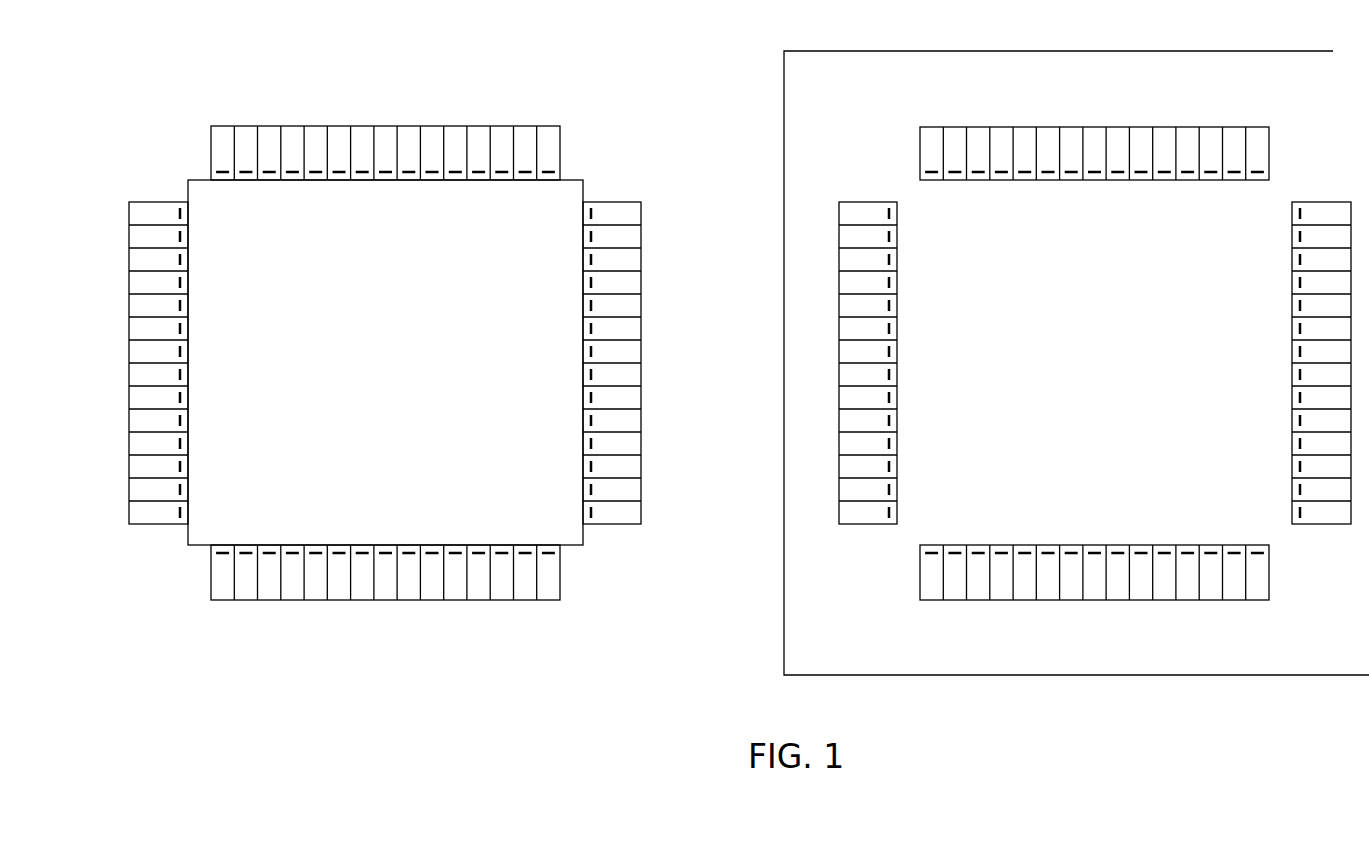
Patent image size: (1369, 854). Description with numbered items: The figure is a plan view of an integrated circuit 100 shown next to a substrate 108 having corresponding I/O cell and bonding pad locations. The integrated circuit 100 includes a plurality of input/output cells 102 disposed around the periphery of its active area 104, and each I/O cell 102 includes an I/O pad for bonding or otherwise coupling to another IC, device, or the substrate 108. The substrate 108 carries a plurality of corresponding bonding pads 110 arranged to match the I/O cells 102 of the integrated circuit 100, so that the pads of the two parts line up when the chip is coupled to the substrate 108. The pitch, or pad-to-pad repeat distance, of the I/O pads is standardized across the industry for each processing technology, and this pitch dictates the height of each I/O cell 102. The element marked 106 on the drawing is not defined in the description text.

The integrated circuit package 100 is at (438, 331).
The lead 102 is at (641, 208).
The package body 104 is at (407, 375).
The lead terminal end 106 is at (592, 232).
The printed circuit board 108 is at (1035, 338).
The solder pad 110 is at (920, 560).